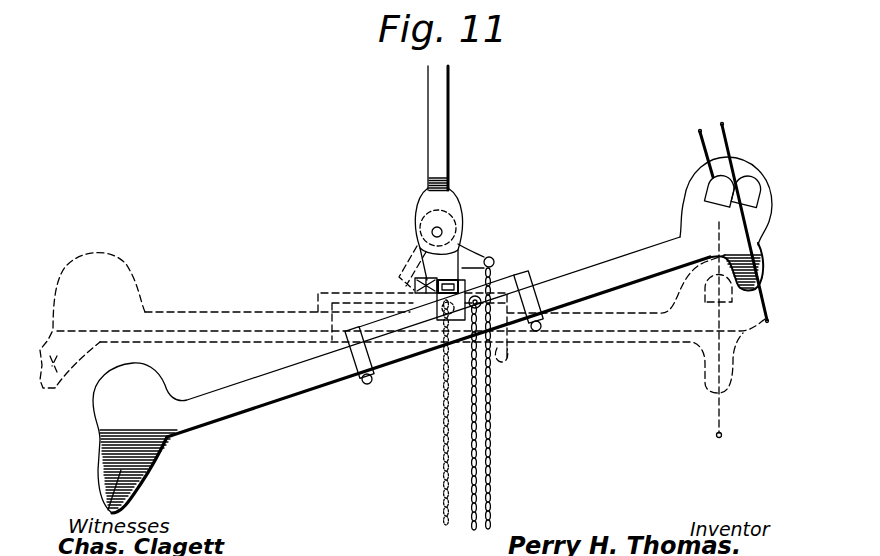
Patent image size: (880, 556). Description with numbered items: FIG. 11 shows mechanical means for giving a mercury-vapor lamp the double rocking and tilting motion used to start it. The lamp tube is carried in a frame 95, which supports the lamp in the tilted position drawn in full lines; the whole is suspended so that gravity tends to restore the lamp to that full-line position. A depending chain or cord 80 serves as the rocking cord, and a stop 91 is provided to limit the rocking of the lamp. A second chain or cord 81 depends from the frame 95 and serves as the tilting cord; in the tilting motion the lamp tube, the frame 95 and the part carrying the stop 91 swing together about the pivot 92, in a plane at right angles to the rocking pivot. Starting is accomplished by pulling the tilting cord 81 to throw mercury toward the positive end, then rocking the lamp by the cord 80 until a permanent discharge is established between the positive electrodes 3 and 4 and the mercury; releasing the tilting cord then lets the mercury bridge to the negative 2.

The negative 2 is at (127, 483).
The positive electrode 3 is at (717, 199).
The positive electrode 4 is at (747, 185).
The rocking cord or chain 80 is at (446, 415).
The tilting cord or chain 81 is at (489, 417).
The stop 91 is at (423, 308).
The tilting pivot 92 is at (446, 231).
The frame 95 is at (522, 276).